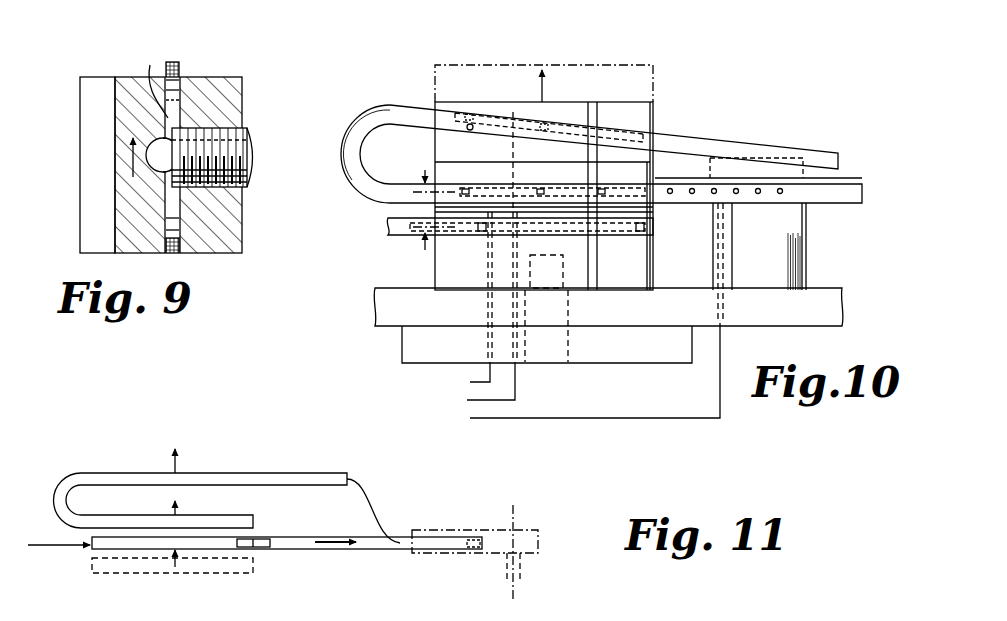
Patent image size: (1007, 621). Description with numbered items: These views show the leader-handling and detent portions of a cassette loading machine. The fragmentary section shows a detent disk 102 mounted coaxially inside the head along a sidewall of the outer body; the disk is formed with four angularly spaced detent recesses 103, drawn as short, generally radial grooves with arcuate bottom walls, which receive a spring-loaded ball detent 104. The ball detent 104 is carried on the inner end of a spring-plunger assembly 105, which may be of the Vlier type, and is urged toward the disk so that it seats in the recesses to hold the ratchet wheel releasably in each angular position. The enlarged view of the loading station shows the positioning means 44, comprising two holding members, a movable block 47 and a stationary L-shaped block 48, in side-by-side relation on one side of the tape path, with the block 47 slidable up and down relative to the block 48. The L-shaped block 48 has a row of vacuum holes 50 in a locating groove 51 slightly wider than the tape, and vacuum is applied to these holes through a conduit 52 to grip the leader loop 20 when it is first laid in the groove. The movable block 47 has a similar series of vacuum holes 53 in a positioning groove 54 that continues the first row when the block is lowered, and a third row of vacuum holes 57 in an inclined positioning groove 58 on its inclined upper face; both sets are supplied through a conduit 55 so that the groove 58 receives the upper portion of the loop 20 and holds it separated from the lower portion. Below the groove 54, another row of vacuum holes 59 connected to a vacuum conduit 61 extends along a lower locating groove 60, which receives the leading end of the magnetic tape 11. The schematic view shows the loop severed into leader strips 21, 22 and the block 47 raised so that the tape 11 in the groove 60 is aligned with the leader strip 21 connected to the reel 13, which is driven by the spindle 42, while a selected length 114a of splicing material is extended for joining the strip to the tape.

In FIG. 9, the detent disk 102 is at (125, 220).
In FIG. 9, the detent recesses 103 is at (141, 151).
In FIG. 9, the ball detent 104 is at (150, 162).
In FIG. 9, the spring-plunger assembly 105 is at (197, 130).
In FIG. 10, the leader loop 20 is at (352, 189).
In FIG. 11, the leader loop 20 is at (73, 471).
In FIG. 10, the leader strip 21 is at (832, 196).
In FIG. 11, the leader strip 21 is at (376, 550).
In FIG. 10, the leader strip 22 is at (703, 137).
In FIG. 11, the leader strip 22 is at (268, 475).
In FIG. 10, the positioning means 44 is at (661, 96).
In FIG. 10, the movable block 47 is at (655, 82).
In FIG. 10, the L-shaped block 48 is at (806, 268).
In FIG. 10, the vacuum holes 50 is at (701, 204).
In FIG. 10, the locating groove 51 is at (762, 183).
In FIG. 10, the conduit 52 is at (722, 272).
In FIG. 10, the vacuum holes 53 is at (467, 191).
In FIG. 10, the positioning groove 54 is at (603, 190).
In FIG. 10, the conduit 55 is at (518, 276).
In FIG. 10, the vacuum holes 57 is at (470, 116).
In FIG. 10, the positioning groove 58 is at (471, 131).
In FIG. 10, the vacuum holes 59 is at (482, 240).
In FIG. 10, the locating groove 60 is at (443, 213).
In FIG. 10, the vacuum conduit 61 is at (488, 306).
In FIG. 11, the magnetic tape 11 is at (138, 546).
In FIG. 11, the reel 13 is at (470, 530).
In FIG. 11, the spindle 42 is at (505, 566).
In FIG. 11, the selected length of splicing material 114a is at (272, 540).